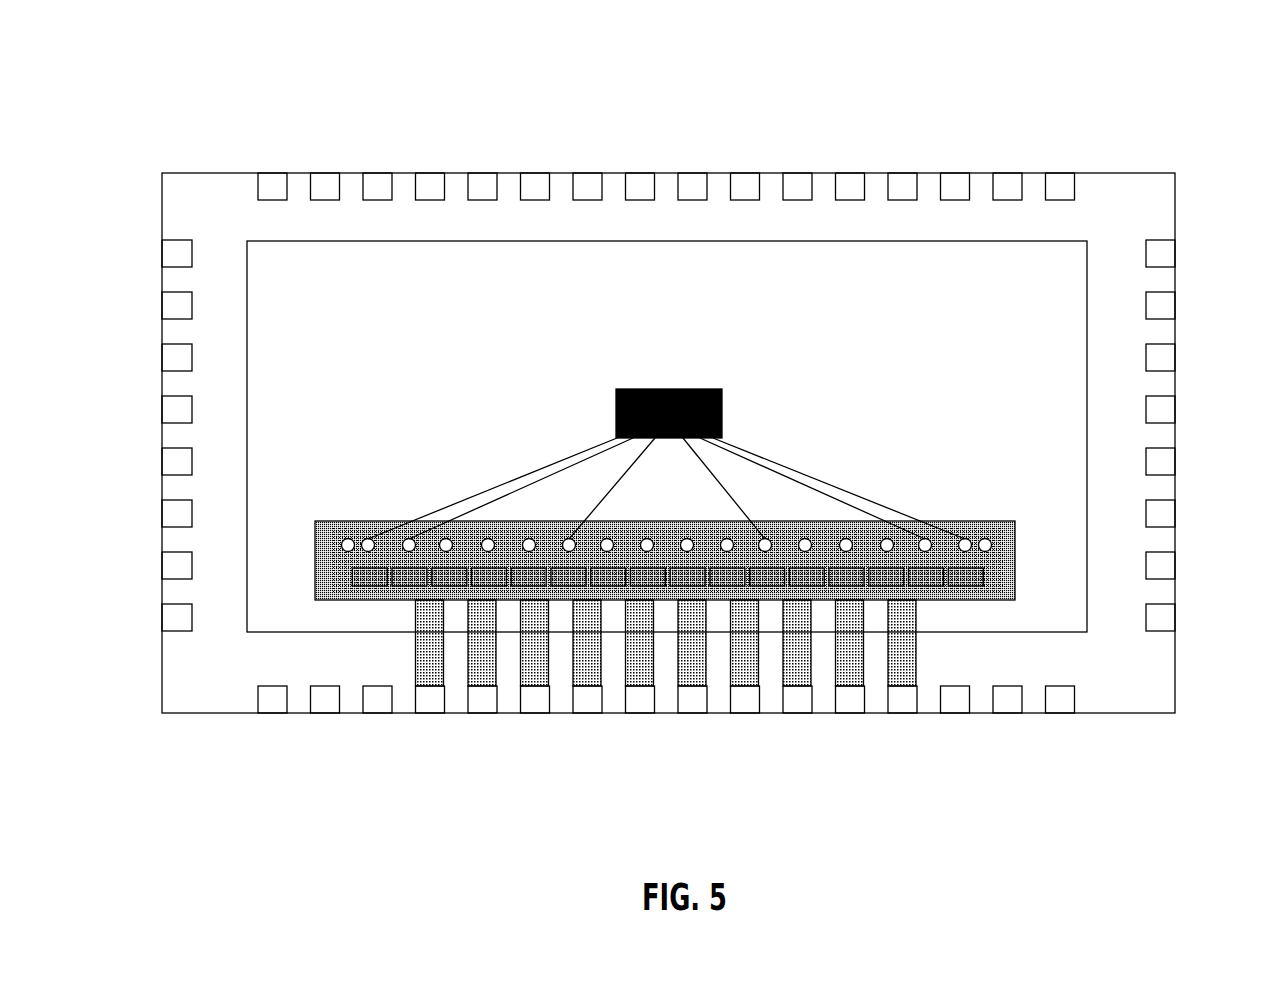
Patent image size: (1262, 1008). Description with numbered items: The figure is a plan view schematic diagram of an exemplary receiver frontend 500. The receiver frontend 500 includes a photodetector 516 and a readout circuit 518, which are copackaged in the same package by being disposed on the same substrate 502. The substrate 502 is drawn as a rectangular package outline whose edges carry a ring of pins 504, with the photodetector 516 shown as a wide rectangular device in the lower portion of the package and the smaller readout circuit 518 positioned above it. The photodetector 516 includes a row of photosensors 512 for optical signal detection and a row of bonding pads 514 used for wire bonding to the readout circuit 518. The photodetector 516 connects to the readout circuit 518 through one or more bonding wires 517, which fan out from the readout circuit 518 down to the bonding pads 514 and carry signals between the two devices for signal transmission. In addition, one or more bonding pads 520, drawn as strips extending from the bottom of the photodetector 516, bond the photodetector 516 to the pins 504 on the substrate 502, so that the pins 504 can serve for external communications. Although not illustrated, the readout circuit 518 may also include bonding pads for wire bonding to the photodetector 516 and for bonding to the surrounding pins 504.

The receiver frontend 500 is at (680, 36).
The substrate 502 is at (756, 273).
The pins 504 is at (1165, 413).
The photosensors 512 is at (926, 573).
The bonding pads 514 is at (879, 537).
The photodetector 516 is at (1022, 535).
The bonding wires 517 is at (810, 473).
The readout circuit 518 is at (727, 398).
The bonding pads 520 is at (915, 635).